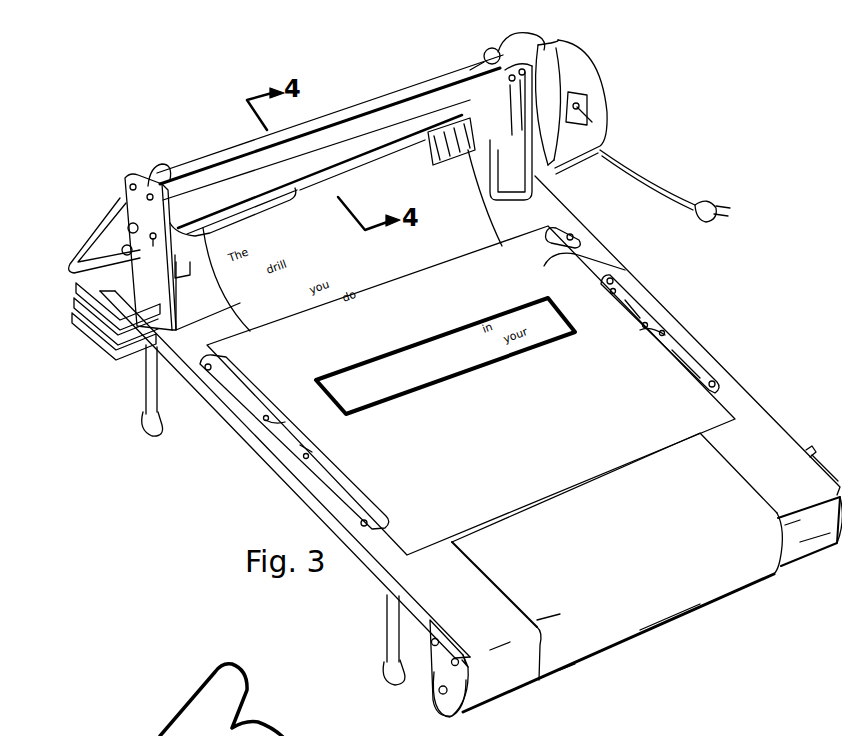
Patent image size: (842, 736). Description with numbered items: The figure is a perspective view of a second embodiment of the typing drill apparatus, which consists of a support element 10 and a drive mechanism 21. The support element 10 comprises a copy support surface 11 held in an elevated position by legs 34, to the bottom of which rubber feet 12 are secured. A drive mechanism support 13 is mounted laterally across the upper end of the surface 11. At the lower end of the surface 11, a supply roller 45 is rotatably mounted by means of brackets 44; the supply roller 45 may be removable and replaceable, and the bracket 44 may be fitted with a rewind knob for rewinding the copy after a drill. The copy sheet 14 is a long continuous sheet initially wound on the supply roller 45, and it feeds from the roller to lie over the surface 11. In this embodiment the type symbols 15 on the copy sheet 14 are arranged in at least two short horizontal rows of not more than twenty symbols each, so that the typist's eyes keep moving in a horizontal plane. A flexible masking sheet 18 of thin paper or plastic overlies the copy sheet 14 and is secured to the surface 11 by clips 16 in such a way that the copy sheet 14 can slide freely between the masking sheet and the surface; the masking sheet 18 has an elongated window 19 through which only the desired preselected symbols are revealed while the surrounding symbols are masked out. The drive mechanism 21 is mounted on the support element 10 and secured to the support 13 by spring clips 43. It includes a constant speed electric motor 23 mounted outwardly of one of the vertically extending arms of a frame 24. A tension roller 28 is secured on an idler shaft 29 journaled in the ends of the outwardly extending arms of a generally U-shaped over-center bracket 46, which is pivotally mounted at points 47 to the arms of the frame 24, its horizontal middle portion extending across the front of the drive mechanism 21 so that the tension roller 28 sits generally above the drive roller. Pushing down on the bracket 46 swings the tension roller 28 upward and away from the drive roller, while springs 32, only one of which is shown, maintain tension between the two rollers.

The support element 10 is at (700, 318).
The copy support surface 11 is at (752, 395).
The rubber feet 12 is at (146, 433).
The drive mechanism support 13 is at (330, 112).
The copy sheet 14 is at (663, 605).
The type symbols 15 is at (748, 577).
The clips 16 is at (278, 447).
The masking sheet 18 is at (584, 248).
The window 19 is at (605, 262).
The drive mechanism 21 is at (135, 722).
The constant speed electric motor 23 is at (605, 78).
The frame 24 is at (108, 225).
The tension roller 28 is at (413, 128).
The idler shaft 29 is at (488, 48).
The springs 32 is at (532, 78).
The legs 34 is at (146, 400).
The spring clips 43 is at (150, 166).
The brackets 44 is at (440, 688).
The supply roller 45 is at (500, 690).
The over-center bracket 46 is at (244, 213).
The pivot points 47 is at (153, 240).